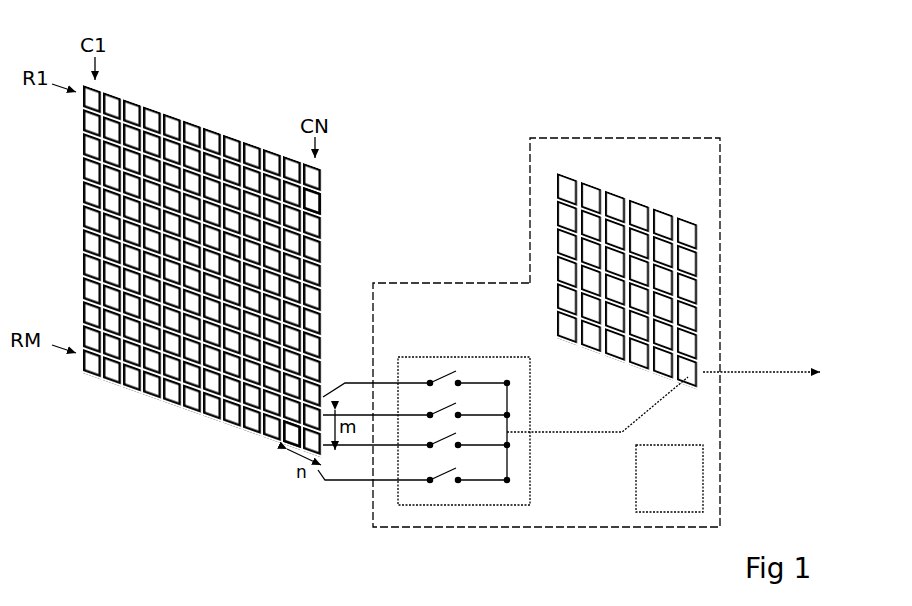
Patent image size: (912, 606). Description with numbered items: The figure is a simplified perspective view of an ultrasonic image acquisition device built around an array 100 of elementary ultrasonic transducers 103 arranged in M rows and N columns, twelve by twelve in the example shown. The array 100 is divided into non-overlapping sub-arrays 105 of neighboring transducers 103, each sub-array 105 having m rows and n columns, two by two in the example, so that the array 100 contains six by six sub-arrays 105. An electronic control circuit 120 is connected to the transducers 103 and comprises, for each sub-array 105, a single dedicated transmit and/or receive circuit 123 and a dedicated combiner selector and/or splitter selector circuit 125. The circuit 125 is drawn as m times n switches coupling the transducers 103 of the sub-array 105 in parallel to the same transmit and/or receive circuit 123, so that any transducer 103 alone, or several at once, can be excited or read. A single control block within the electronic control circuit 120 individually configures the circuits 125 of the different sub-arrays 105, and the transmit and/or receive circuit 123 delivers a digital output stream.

The array 100 is at (235, 90).
The elementary ultrasonic transducer 103 is at (312, 199).
The sub-array 105 is at (284, 441).
The electronic control circuit 120 is at (627, 138).
The transmit and/or receive circuit 123 is at (692, 378).
The combiner selector and/or splitter selector circuit 125 is at (531, 467).